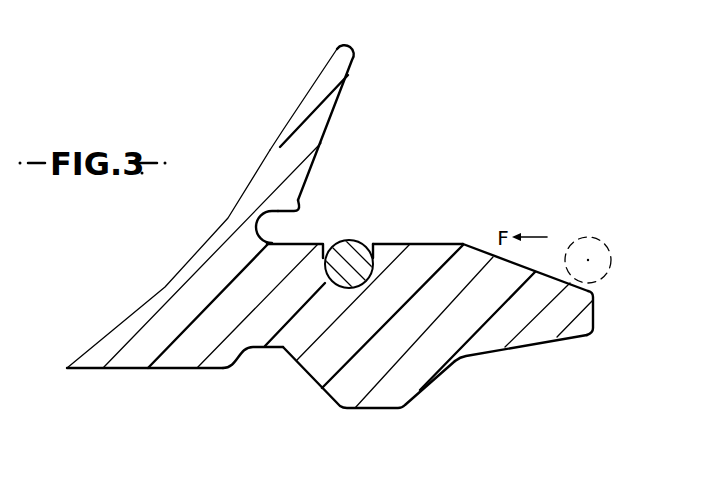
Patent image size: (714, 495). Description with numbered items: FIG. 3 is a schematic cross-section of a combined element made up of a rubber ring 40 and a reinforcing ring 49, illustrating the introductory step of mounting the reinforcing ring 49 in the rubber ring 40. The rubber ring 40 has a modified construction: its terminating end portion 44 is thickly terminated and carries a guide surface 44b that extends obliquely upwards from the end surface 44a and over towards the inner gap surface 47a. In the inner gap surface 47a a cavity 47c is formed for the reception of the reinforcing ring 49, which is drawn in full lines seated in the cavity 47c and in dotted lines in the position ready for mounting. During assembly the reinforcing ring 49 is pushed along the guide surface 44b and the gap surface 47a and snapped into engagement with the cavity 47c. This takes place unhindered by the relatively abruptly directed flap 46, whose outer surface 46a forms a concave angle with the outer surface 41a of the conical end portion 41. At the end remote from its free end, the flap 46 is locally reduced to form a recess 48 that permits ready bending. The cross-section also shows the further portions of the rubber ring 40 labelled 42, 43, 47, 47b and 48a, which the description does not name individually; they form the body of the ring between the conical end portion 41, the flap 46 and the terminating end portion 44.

The rubber ring 40 is at (167, 334).
The conical end portion 41 is at (88, 362).
The outer surface of the conical end portion 41a is at (118, 328).
The bent portion 42 is at (273, 350).
The bottom portion 43 is at (377, 410).
The terminating end portion 44 is at (520, 320).
The end surface 44a is at (594, 328).
The guide surface 44b is at (545, 273).
The flap 46 is at (340, 99).
The outer surface of the flap 46a is at (312, 90).
The intermediate portion 47 is at (353, 162).
The inner gap surface 47a is at (433, 243).
The finger inner surface 47b is at (330, 127).
The cavity 47c is at (375, 247).
The recess 48 is at (270, 223).
The lip 48a is at (300, 212).
The reinforcing ring 49 is at (344, 246).